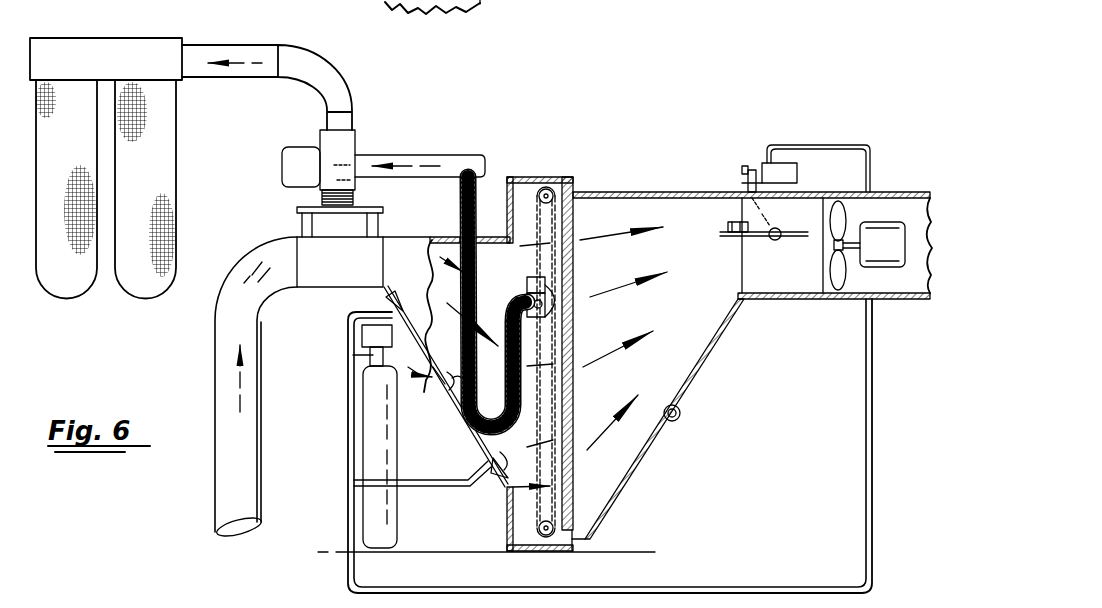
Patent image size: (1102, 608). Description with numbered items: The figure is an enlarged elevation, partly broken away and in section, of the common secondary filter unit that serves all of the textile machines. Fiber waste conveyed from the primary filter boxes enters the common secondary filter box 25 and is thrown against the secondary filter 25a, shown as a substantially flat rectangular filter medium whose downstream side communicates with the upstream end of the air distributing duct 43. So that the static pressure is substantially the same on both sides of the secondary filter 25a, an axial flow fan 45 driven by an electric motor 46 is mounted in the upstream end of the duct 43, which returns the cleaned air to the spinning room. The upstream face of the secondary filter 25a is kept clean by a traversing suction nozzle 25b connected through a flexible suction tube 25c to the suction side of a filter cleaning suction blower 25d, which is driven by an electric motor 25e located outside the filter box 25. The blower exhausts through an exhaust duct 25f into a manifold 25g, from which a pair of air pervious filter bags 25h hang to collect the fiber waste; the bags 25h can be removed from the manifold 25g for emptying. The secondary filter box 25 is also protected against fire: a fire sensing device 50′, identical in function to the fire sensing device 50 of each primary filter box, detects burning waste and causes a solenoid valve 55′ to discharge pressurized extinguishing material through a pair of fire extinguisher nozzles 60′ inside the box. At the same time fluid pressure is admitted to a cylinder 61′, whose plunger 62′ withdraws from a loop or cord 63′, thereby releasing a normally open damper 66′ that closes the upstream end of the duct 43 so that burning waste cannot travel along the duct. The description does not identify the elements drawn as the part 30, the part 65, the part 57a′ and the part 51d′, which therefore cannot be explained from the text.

The manifold 25g is at (82, 46).
The filter bags or socks 25h is at (68, 287).
The exhaust duct 25f is at (336, 80).
The filter cleaning suction blower 25d is at (344, 146).
The electric motor 25e is at (284, 170).
The flexible suction tube 25c is at (464, 198).
The common secondary filter box 25 is at (520, 176).
The traversing suction nozzle 25b is at (557, 296).
The secondary filter 25a is at (566, 378).
The upper structure 30 is at (434, 20).
The upper conduit 65 is at (492, 0).
The tube 57a′ is at (850, 142).
The plunger 62′ is at (752, 170).
The loop or cord 63′ is at (748, 183).
The cylinder 61′ is at (797, 175).
The damper 66′ is at (750, 240).
The air distributing duct 43 is at (752, 300).
The axial flow fan 45 is at (838, 295).
The electric motor 46 is at (892, 266).
The pivot 51d′ is at (680, 414).
The fire extinguisher nozzles 60′ is at (396, 292).
The solenoid valve 55′ is at (373, 353).
The fire sensing device 50′ is at (427, 384).
The fire sensing device 50 is at (362, 440).